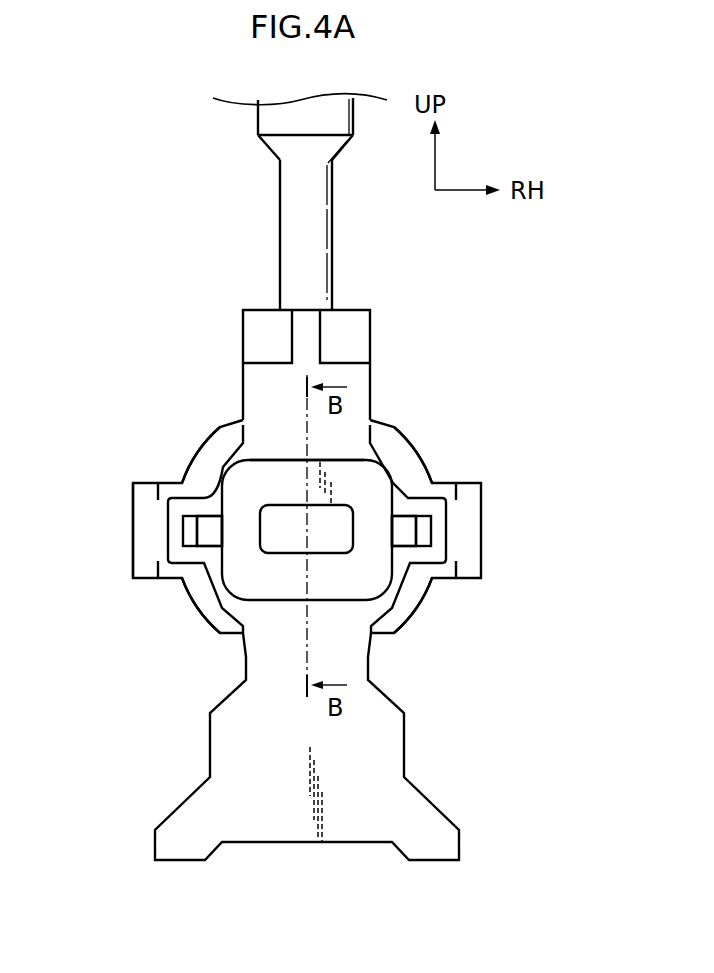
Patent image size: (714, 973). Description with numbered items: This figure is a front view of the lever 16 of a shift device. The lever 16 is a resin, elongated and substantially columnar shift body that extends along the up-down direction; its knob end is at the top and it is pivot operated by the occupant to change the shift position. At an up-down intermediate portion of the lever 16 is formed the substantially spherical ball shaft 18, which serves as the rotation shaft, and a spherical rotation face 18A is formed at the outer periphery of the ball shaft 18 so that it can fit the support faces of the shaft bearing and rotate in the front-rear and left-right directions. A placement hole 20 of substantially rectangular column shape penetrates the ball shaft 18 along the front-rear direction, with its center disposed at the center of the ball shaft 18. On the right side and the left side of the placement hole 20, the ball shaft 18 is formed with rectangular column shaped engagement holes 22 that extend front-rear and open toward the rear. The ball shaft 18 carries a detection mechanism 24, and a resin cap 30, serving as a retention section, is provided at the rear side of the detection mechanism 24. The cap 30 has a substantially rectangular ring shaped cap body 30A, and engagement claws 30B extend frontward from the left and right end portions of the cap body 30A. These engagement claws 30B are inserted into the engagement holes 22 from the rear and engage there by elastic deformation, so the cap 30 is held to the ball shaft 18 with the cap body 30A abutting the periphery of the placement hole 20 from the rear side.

The lever 16 is at (241, 308).
The ball shaft 18 is at (207, 436).
The rotation face 18A is at (202, 621).
The placement hole 20 is at (344, 544).
The engagement holes 22 is at (196, 520).
The detection mechanism 24 is at (283, 454).
The cap 30 is at (227, 467).
The cap body 30A is at (378, 485).
The engagement claws 30B is at (197, 533).